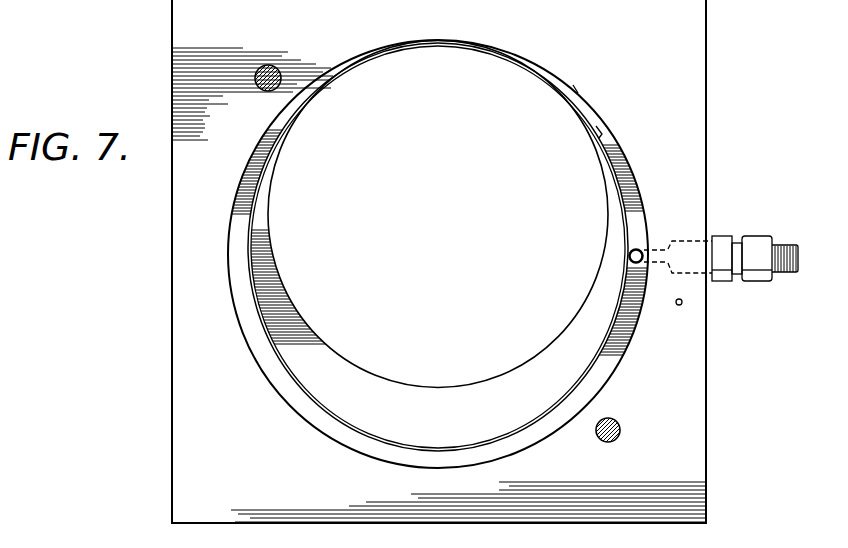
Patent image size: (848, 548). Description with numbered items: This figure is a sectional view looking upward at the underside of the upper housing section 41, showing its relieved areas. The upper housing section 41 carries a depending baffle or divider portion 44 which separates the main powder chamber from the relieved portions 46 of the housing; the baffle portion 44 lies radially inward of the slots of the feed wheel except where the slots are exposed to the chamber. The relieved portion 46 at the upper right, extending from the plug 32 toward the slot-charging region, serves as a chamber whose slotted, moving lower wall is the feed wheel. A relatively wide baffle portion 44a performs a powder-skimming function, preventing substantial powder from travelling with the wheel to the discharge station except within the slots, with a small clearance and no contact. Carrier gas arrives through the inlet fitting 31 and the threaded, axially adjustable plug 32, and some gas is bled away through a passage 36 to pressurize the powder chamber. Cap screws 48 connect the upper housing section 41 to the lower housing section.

The upper housing section 41 is at (707, 52).
The baffle portion 44 is at (262, 332).
The wide baffle portion 44a is at (604, 128).
The relieved portion 46 is at (632, 170).
The cap screw 48 is at (277, 68).
The plug 32 is at (643, 250).
The inlet fitting 31 is at (755, 236).
The passage 36 is at (682, 302).